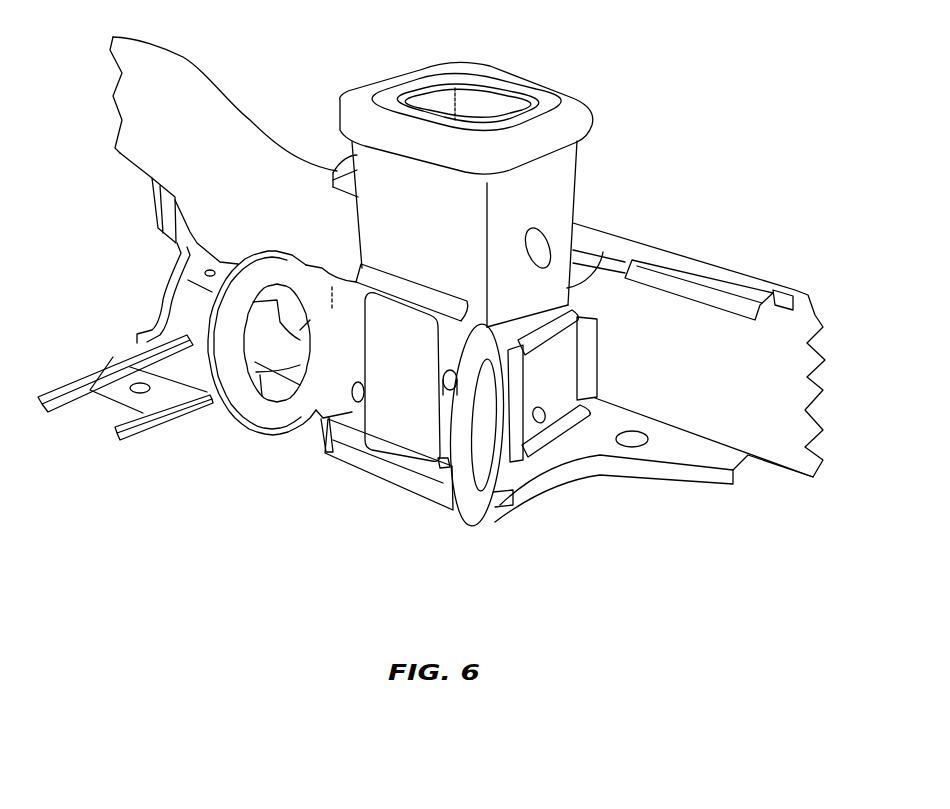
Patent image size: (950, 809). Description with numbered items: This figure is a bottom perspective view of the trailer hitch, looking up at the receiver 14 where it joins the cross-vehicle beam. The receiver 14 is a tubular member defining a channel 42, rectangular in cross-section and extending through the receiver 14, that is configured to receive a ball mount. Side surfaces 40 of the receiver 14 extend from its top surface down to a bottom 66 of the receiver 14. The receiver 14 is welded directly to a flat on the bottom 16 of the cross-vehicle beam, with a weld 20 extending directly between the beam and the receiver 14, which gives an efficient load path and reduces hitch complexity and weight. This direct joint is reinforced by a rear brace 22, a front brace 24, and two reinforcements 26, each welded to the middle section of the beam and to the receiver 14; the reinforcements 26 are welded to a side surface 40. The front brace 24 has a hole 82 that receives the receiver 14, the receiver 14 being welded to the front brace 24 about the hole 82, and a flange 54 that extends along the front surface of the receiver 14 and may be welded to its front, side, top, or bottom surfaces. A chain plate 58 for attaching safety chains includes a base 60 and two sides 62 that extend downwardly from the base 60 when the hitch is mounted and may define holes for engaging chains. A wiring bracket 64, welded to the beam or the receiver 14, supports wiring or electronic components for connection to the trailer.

The receiver 14 is at (480, 60).
The channel 42 is at (448, 100).
The side surface 40 is at (557, 177).
The bottom 66 is at (340, 165).
The chain plate 58 is at (270, 474).
The sides 62 is at (242, 437).
The wiring bracket 64 is at (110, 382).
The base 60 is at (338, 452).
The flange 54 is at (357, 460).
The front brace 24 is at (410, 483).
The hole 82 is at (440, 462).
The reinforcements 26 is at (552, 397).
The weld 20 is at (567, 292).
The rear brace 22 is at (673, 265).
The bottom 16 is at (712, 393).